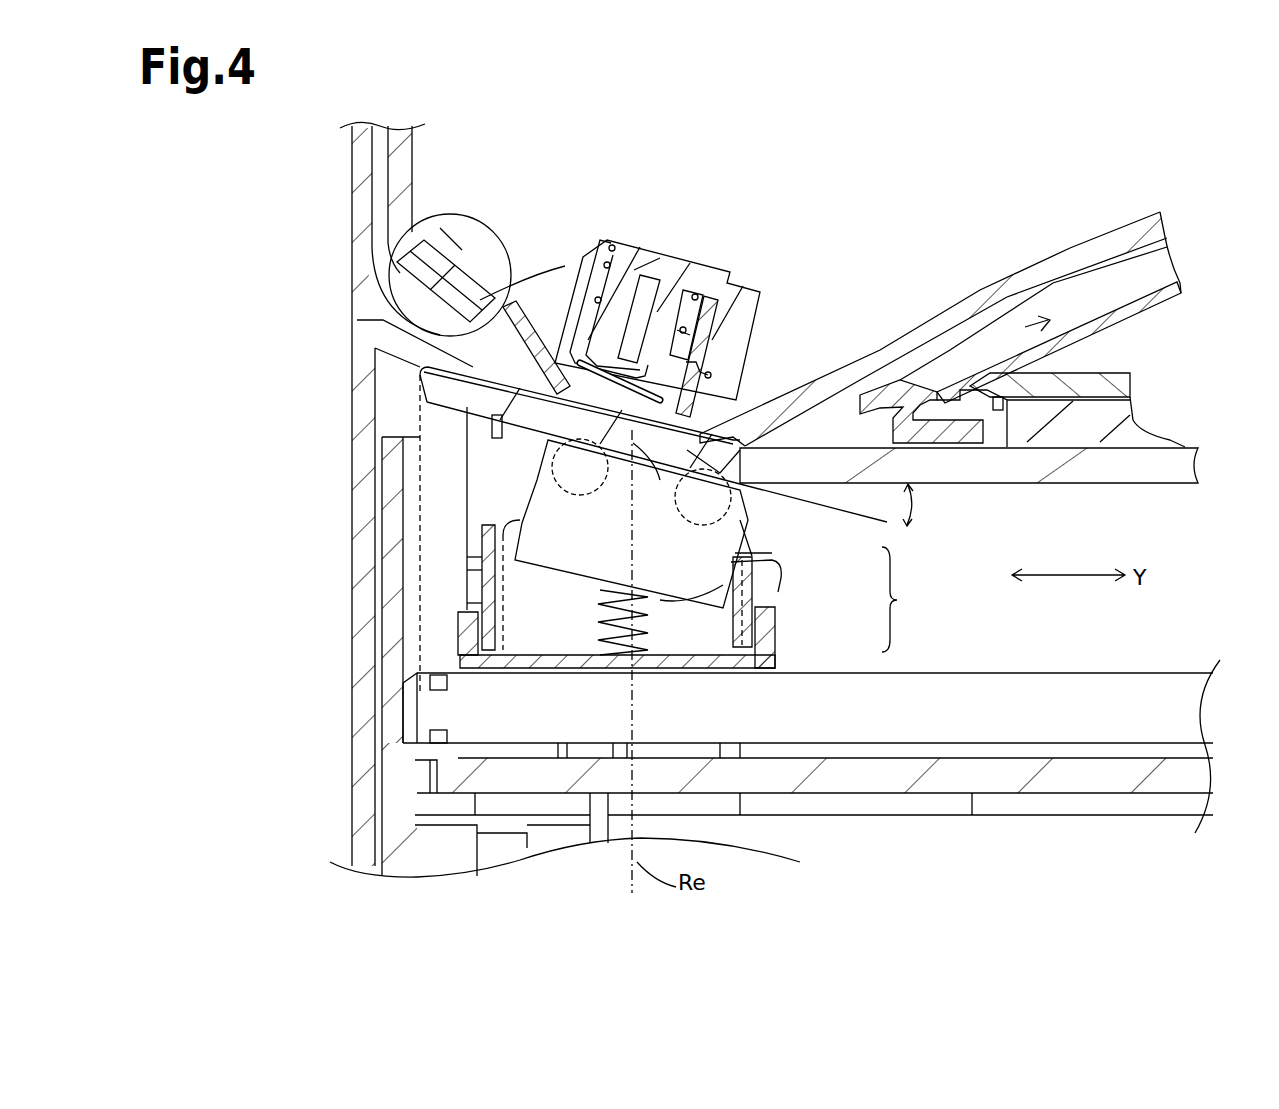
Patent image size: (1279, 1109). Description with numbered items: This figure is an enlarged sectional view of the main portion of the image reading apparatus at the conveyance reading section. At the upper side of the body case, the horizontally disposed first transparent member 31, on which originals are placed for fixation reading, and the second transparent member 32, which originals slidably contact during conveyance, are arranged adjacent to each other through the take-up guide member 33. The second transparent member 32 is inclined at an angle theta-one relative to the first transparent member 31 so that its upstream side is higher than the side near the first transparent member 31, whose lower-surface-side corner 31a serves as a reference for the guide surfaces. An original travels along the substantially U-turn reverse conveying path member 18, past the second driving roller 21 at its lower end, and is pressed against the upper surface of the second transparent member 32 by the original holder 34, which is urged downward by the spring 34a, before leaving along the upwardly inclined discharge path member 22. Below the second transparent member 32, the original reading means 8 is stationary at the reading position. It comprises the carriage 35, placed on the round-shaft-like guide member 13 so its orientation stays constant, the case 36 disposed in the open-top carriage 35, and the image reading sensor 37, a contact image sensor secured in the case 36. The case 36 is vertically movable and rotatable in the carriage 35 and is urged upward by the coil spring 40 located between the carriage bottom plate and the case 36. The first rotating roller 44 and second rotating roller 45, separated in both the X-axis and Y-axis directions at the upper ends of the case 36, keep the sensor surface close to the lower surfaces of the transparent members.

The reverse conveying path member 18 is at (405, 160).
The second driving roller 21 is at (458, 240).
The original holder 34 is at (556, 298).
The spring 34a is at (677, 328).
The lower-surface-side corner 31a is at (778, 443).
The take-up guide member 33 is at (885, 395).
The upwardly inclined discharge path member 22 is at (1093, 385).
The second transparent member 32 is at (455, 393).
The first rotating roller 44 is at (517, 450).
The second rotating roller 45 is at (748, 497).
The case 36 is at (755, 538).
The image reading sensor 37 is at (775, 578).
The carriage 35 is at (763, 620).
The coil spring 40 is at (750, 646).
The original reading means 8 is at (903, 599).
The first transparent member 31 is at (1040, 470).
The round-shaft-like guide member 13 is at (1037, 683).